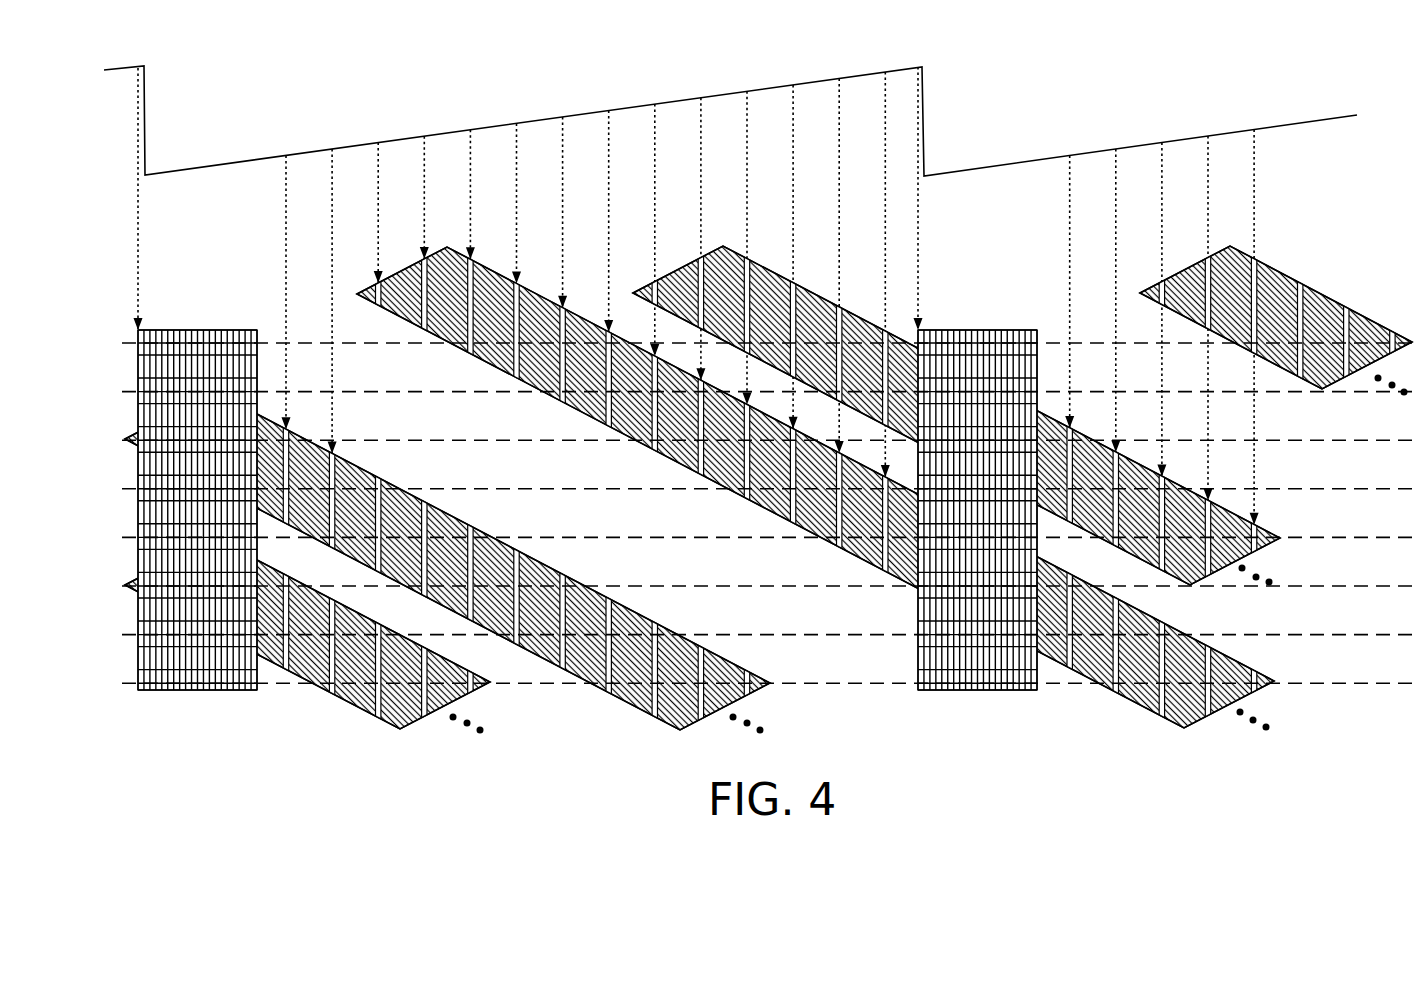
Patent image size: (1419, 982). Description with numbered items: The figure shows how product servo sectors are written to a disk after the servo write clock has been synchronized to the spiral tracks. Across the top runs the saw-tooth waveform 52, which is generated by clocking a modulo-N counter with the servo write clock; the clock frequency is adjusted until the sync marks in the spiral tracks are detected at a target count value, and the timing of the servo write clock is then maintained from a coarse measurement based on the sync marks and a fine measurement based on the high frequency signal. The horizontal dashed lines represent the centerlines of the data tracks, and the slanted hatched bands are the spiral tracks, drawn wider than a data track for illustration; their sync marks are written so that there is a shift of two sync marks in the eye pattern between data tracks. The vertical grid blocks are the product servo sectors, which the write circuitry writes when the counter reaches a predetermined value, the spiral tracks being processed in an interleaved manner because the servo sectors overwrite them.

The saw-tooth waveform 52 is at (582, 113).